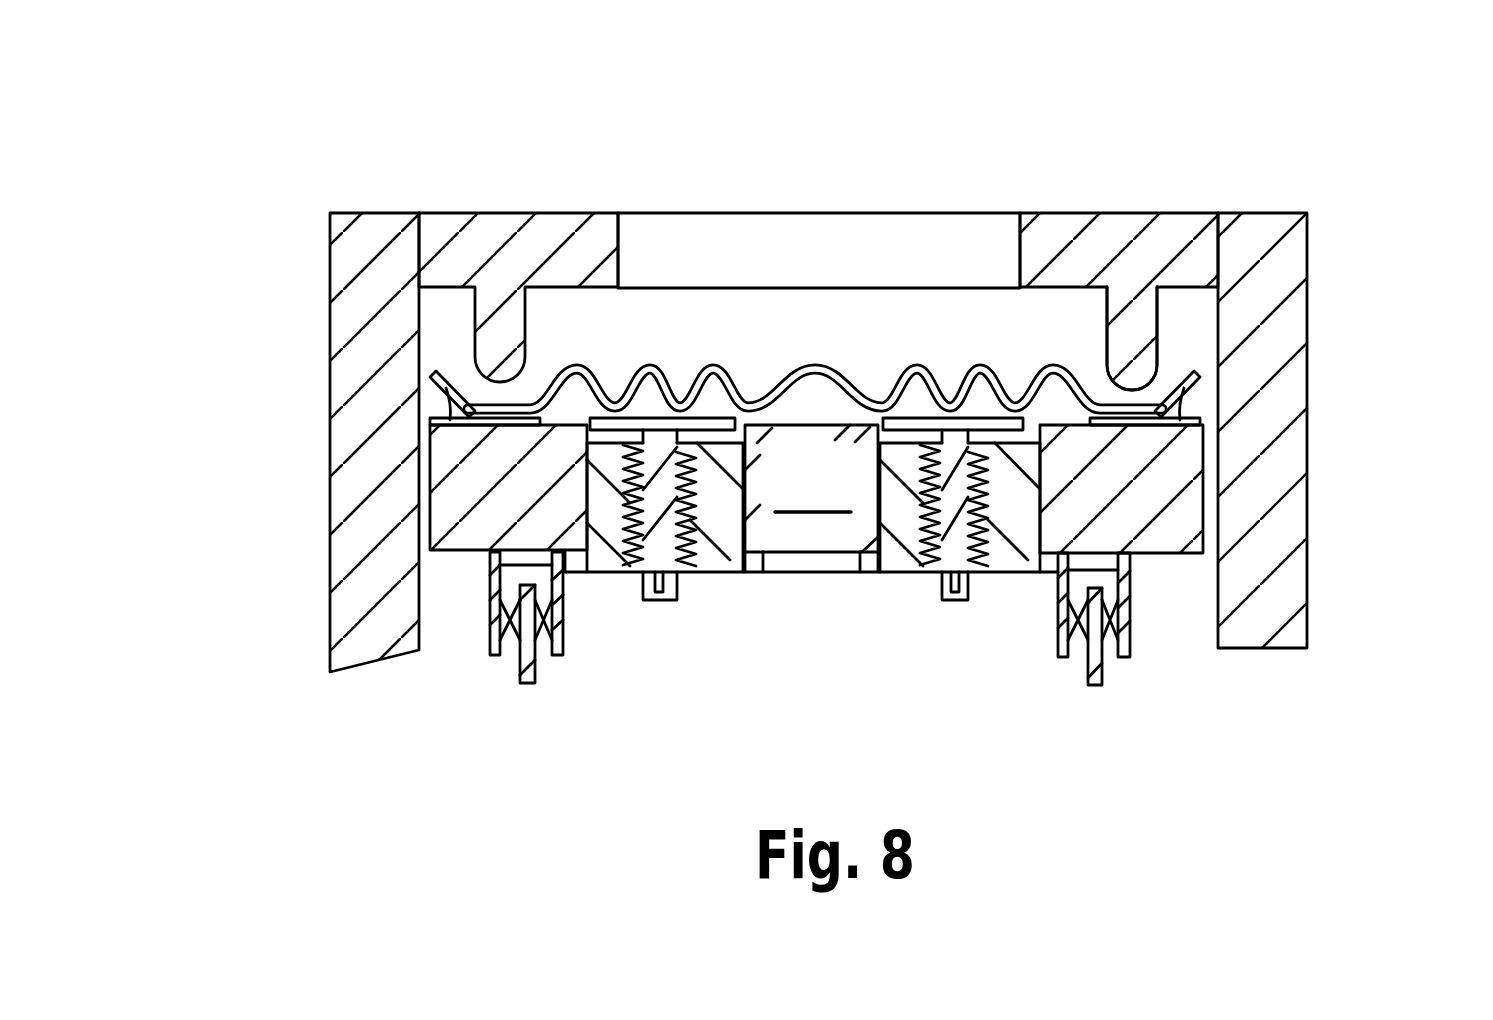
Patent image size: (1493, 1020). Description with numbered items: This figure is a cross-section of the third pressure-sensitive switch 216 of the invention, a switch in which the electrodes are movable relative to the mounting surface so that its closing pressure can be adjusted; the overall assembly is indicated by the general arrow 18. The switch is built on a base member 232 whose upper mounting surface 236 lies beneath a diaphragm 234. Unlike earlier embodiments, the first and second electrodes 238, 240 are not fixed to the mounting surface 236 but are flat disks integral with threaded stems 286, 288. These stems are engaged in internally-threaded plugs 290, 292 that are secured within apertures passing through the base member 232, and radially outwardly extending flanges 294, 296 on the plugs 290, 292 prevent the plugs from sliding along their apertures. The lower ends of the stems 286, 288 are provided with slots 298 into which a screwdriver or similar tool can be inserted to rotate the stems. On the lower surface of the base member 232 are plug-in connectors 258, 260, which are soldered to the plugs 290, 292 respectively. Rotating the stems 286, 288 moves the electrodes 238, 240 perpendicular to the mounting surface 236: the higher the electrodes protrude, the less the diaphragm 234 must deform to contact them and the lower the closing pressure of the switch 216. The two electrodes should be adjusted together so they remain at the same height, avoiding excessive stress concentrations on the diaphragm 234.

The sensor assembly 18 is at (433, 195).
The third pressure-sensitive switch 216 is at (1213, 390).
The base member 232 is at (811, 488).
The diaphragm 234 is at (1088, 360).
The mounting surface 236 is at (540, 432).
The first electrode 238 is at (968, 405).
The second electrode 240 is at (633, 420).
The plug-in connector 258 is at (1125, 623).
The plug-in connector 260 is at (492, 637).
The threaded stem 286 is at (945, 522).
The threaded stem 288 is at (660, 520).
The internally-threaded plug 290 is at (1005, 475).
The internally-threaded plug 292 is at (607, 457).
The radially outwardly extending flange 294 is at (874, 562).
The radially outwardly extending flange 296 is at (580, 560).
The slot 298 is at (658, 598).